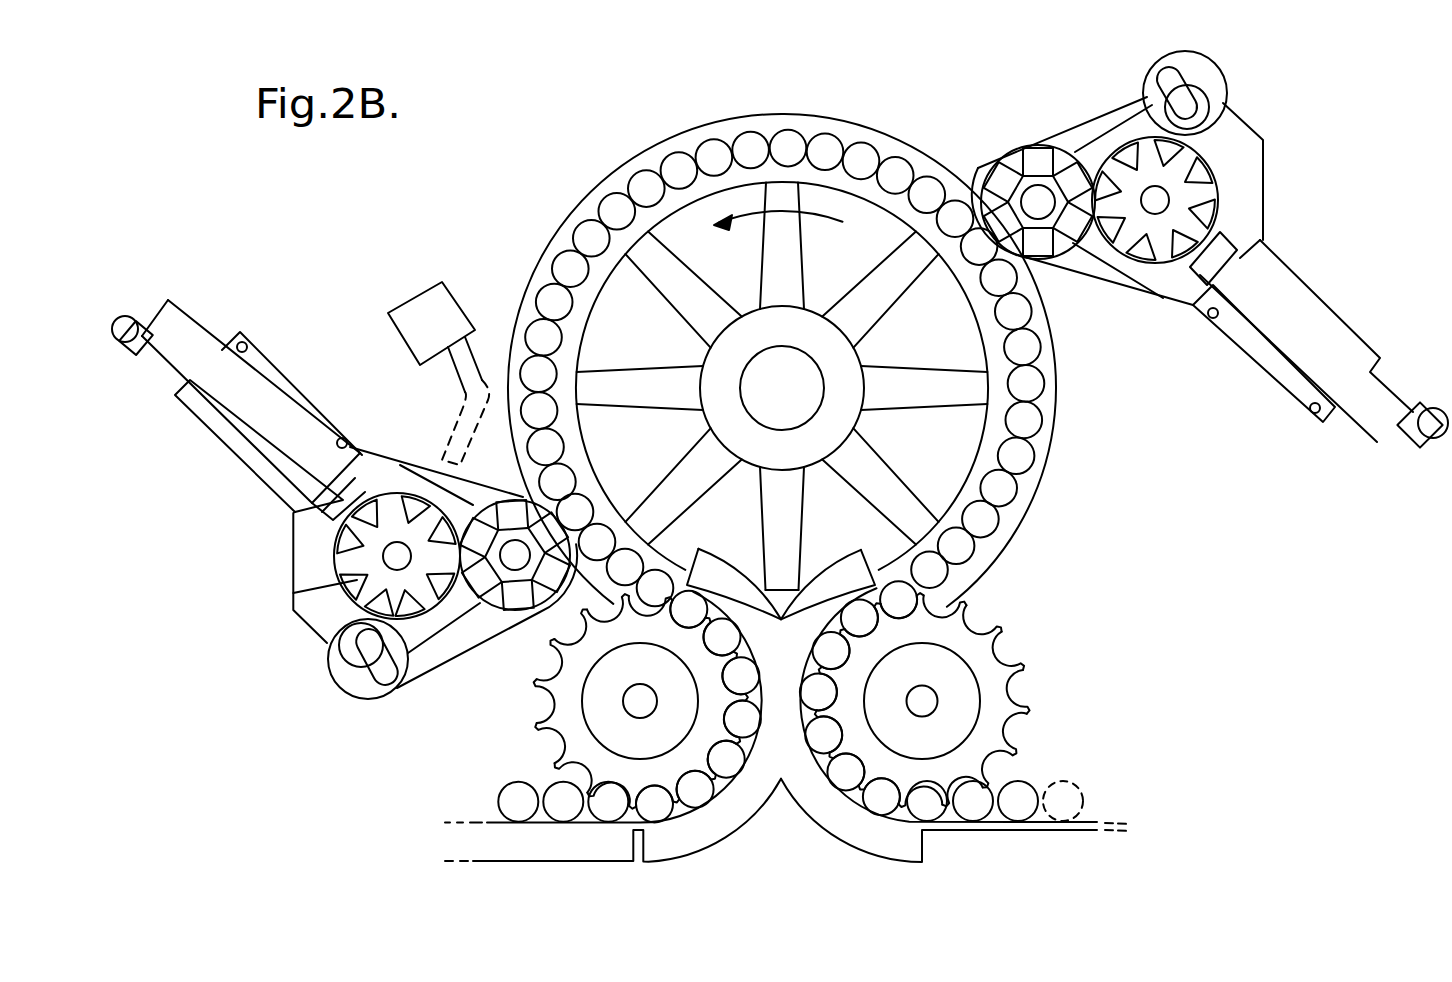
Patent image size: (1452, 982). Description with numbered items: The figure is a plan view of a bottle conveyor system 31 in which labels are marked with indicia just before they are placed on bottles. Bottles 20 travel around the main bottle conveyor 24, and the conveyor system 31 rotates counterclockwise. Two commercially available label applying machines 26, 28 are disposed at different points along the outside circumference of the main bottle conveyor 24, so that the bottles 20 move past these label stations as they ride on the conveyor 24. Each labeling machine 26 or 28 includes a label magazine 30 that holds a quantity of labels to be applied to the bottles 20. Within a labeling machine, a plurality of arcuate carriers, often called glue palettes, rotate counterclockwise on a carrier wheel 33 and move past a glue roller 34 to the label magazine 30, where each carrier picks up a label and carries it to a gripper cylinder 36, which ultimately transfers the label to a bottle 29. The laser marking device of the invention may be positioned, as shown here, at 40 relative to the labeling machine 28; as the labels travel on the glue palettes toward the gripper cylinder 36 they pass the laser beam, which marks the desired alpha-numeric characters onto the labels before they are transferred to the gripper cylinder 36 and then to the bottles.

The bottles 20 is at (1003, 487).
The main bottle conveyor 24 is at (767, 401).
The label applying machine 26 is at (1277, 175).
The label applying machine 28 is at (231, 467).
The bottle 29 is at (588, 499).
The label magazine 30 is at (191, 341).
The bottle conveyor system 31 is at (1113, 605).
The carrier wheel 33 is at (300, 600).
The glue roller 34 is at (361, 696).
The gripper cylinder 36 is at (495, 598).
The laser marker position 40 is at (440, 378).